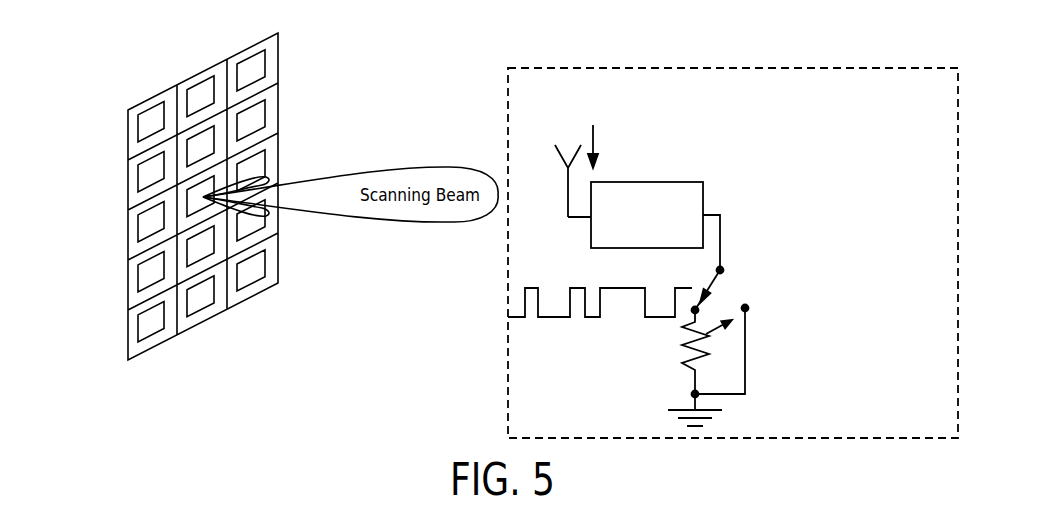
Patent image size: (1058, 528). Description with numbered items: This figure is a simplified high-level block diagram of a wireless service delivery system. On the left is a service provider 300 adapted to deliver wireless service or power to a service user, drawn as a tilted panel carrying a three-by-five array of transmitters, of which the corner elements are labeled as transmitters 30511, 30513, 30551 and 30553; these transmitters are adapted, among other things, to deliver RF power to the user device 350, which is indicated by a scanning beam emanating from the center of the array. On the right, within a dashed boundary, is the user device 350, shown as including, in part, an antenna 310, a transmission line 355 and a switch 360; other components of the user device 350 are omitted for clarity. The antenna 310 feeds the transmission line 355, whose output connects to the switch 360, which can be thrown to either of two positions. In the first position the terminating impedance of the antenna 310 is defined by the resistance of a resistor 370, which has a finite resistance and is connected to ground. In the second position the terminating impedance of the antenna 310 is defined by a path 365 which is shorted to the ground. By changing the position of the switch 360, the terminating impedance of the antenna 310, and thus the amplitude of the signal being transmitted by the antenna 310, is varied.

The service provider 300 is at (198, 72).
The transmitter 30511 is at (138, 128).
The transmitter 30513 is at (266, 71).
The transmitter 30551 is at (138, 328).
The transmitter 30553 is at (266, 262).
The antenna 310 is at (580, 150).
The user device 350 is at (740, 64).
The transmission line 355 is at (688, 182).
The switch 360 is at (724, 277).
The path 365 is at (748, 370).
The resistor 370 is at (683, 345).